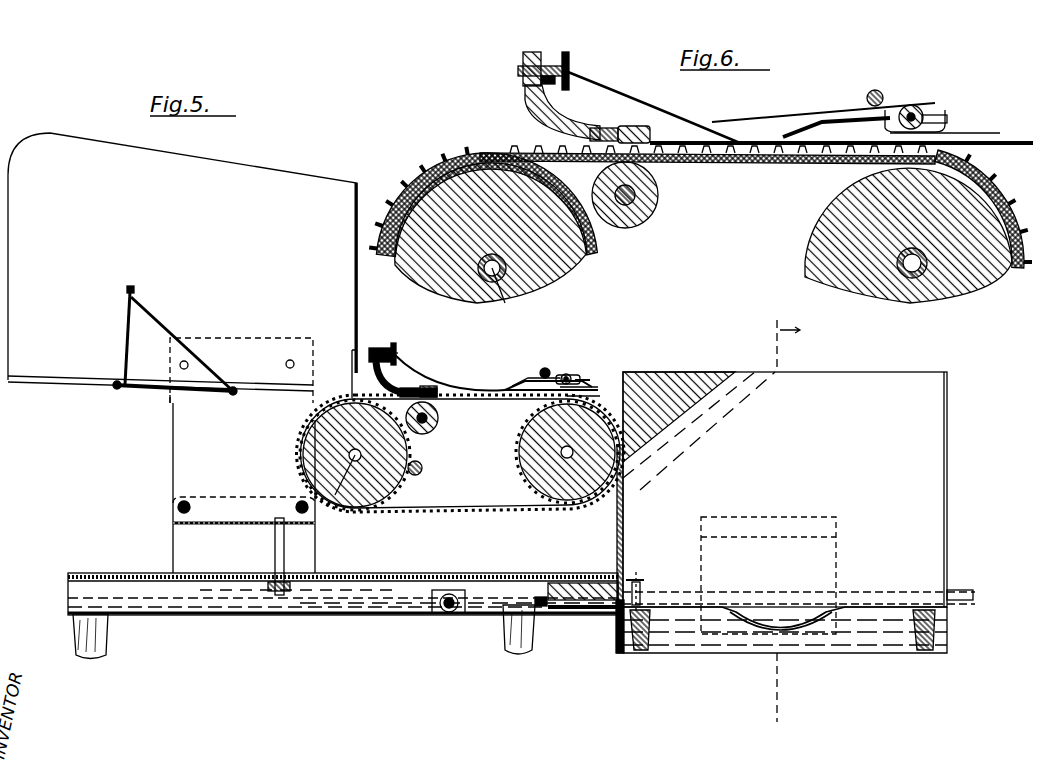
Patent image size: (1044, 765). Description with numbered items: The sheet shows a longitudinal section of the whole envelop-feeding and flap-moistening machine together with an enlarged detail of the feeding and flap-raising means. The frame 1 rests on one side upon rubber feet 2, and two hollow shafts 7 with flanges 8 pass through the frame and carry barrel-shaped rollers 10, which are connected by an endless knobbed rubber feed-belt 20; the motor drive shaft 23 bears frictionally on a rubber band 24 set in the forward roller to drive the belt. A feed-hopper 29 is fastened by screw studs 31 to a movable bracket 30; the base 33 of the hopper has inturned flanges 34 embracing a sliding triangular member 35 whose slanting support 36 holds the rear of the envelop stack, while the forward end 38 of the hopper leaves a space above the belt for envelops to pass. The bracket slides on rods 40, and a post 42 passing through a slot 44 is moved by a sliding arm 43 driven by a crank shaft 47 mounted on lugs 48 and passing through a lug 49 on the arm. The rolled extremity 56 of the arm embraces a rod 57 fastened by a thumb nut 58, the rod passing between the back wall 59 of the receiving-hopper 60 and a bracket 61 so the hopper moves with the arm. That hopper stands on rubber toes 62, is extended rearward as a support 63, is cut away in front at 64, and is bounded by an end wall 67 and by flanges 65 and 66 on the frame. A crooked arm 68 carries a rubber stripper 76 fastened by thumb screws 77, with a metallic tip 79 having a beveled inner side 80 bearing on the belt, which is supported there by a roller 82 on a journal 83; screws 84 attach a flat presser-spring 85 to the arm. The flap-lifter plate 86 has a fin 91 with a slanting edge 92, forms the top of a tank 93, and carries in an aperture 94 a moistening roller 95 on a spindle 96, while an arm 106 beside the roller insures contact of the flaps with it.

In FIG. 5, the frame 1 is at (240, 615).
In FIG. 5, the rubber feet 2 is at (518, 656).
In FIG. 5, the hollow shafts 7 is at (560, 506).
In FIG. 6, the hollow shafts 7 is at (916, 280).
In FIG. 5, the flanges 8 is at (782, 519).
In FIG. 5, the rollers 10 is at (525, 466).
In FIG. 6, the rollers 10 is at (815, 217).
In FIG. 5, the feed-belt 20 is at (380, 513).
In FIG. 6, the feed-belt 20 is at (1000, 191).
In FIG. 5, the drive shaft 23 is at (418, 475).
In FIG. 5, the rubber band 24 is at (405, 446).
In FIG. 6, the rubber band 24 is at (592, 251).
In FIG. 5, the feed-hopper 29 is at (182, 256).
In FIG. 5, the movable bracket 30 is at (252, 524).
In FIG. 5, the screw studs 31 is at (181, 365).
In FIG. 5, the base of feed-hopper 33 is at (101, 386).
In FIG. 5, the inturned flanges 34 is at (168, 398).
In FIG. 5, the triangular member 35 is at (135, 337).
In FIG. 5, the slanting support 36 is at (165, 331).
In FIG. 5, the forward end of feed-hopper 38 is at (352, 300).
In FIG. 5, the rods 40 is at (299, 502).
In FIG. 5, the post 42 is at (278, 602).
In FIG. 5, the sliding arm 43 is at (370, 602).
In FIG. 5, the slot 44 is at (283, 595).
In FIG. 5, the crank shaft 47 is at (450, 613).
In FIG. 6, the crank shaft 47 is at (569, 70).
In FIG. 6, the lugs 48 is at (527, 61).
In FIG. 5, the lug 49 is at (435, 613).
In FIG. 5, the rolled extremity 56 is at (580, 606).
In FIG. 5, the rod 57 is at (960, 601).
In FIG. 5, the thumb nut 58 is at (637, 580).
In FIG. 5, the back wall 59 is at (885, 373).
In FIG. 5, the receiving-hopper 60 is at (799, 581).
In FIG. 5, the bracket 61 is at (738, 545).
In FIG. 5, the rubber toes 62 is at (925, 651).
In FIG. 5, the support 63 is at (870, 653).
In FIG. 5, the cut away 64 is at (770, 640).
In FIG. 5, the flange 65 is at (617, 536).
In FIG. 5, the flange 66 is at (617, 642).
In FIG. 5, the end wall 67 is at (948, 532).
In FIG. 5, the crooked arm 68 is at (378, 348).
In FIG. 6, the crooked arm 68 is at (549, 80).
In FIG. 5, the rubber stripper 76 is at (390, 388).
In FIG. 6, the rubber stripper 76 is at (572, 130).
In FIG. 5, the thumb screws 77 is at (397, 353).
In FIG. 5, the metallic tip 79 is at (428, 390).
In FIG. 6, the metallic tip 79 is at (635, 127).
In FIG. 6, the beveled inner side 80 is at (609, 128).
In FIG. 5, the roller 82 is at (437, 421).
In FIG. 6, the roller 82 is at (658, 203).
In FIG. 5, the journal 83 is at (426, 426).
In FIG. 6, the journal 83 is at (635, 216).
In FIG. 5, the screws 84 is at (392, 346).
In FIG. 6, the screws 84 is at (546, 67).
In FIG. 5, the presser-spring 85 is at (463, 386).
In FIG. 6, the presser-spring 85 is at (676, 126).
In FIG. 5, the plate 86 is at (536, 377).
In FIG. 6, the plate 86 is at (947, 119).
In FIG. 5, the fin 91 is at (521, 381).
In FIG. 6, the fin 91 is at (815, 123).
In FIG. 5, the edge 92 is at (505, 388).
In FIG. 6, the edge 92 is at (790, 122).
In FIG. 5, the tank 93 is at (581, 385).
In FIG. 6, the tank 93 is at (945, 133).
In FIG. 5, the aperture 94 is at (579, 377).
In FIG. 6, the aperture 94 is at (912, 105).
In FIG. 5, the moistening roller 95 is at (568, 374).
In FIG. 6, the moistening roller 95 is at (930, 110).
In FIG. 5, the spindle 96 is at (571, 377).
In FIG. 6, the spindle 96 is at (925, 115).
In FIG. 5, the arm 106 is at (545, 369).
In FIG. 6, the arm 106 is at (872, 96).